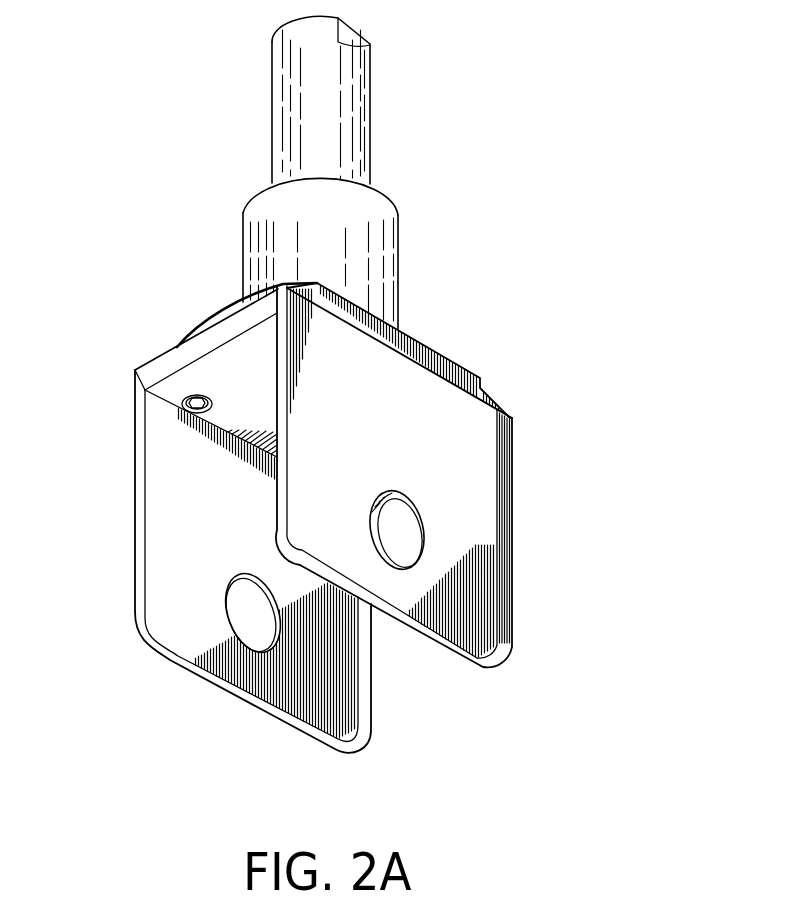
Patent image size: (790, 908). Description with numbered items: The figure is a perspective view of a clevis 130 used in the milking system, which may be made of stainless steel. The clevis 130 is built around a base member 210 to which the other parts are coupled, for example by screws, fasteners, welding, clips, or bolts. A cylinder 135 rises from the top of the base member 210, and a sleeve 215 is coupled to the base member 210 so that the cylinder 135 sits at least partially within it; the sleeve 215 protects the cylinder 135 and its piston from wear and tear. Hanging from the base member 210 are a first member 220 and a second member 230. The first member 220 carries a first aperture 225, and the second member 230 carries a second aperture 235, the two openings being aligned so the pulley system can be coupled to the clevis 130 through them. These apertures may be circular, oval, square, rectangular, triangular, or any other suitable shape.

The clevis 130 is at (373, 384).
The cylinder 135 is at (340, 100).
The sleeve 215 is at (357, 267).
The base member 210 is at (228, 365).
The first member 220 is at (195, 561).
The first aperture 225 is at (243, 614).
The second member 230 is at (447, 475).
The second aperture 235 is at (405, 543).